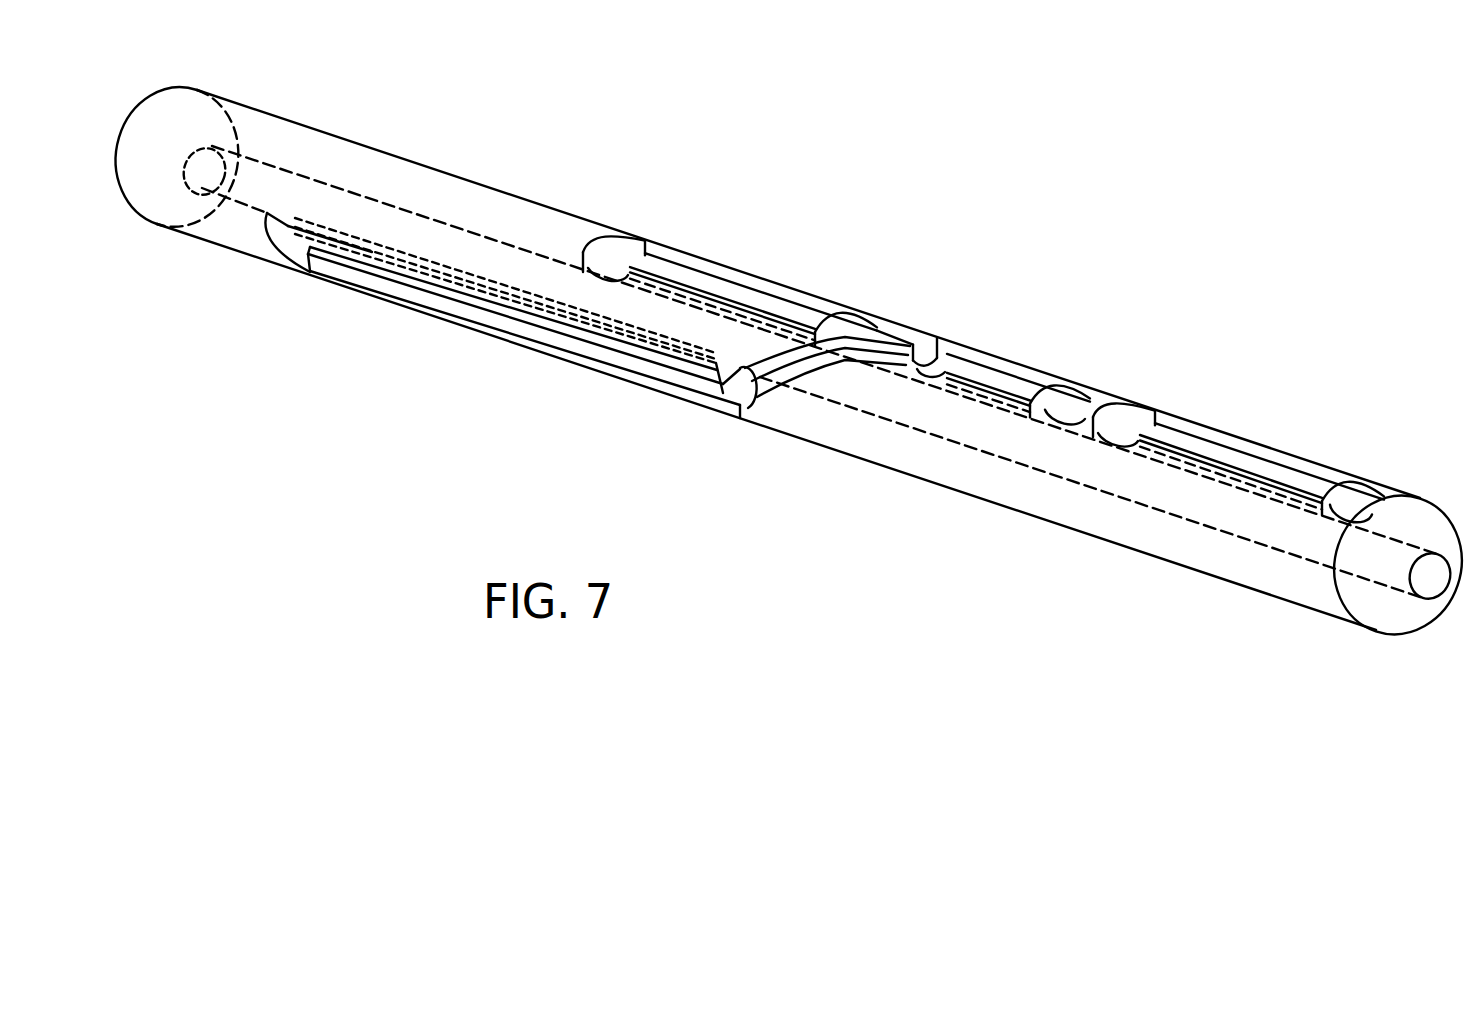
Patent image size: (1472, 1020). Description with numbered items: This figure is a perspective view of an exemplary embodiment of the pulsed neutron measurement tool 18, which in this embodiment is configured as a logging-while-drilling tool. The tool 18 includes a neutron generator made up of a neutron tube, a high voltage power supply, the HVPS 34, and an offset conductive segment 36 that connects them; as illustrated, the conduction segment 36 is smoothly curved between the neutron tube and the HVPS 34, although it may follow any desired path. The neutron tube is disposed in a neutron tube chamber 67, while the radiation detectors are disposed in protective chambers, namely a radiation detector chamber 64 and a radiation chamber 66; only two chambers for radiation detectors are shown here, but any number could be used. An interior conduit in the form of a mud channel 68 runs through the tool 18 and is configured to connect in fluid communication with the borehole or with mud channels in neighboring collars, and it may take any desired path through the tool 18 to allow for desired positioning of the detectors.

The tool 18 is at (794, 325).
The HVPS 34 is at (393, 308).
The offset conductive segment 36 is at (835, 385).
The radiation detector chamber 64 is at (1252, 429).
The radiation chamber 66 is at (690, 248).
The neutron tube chamber 67 is at (1022, 358).
The mud channel 68 is at (1430, 577).